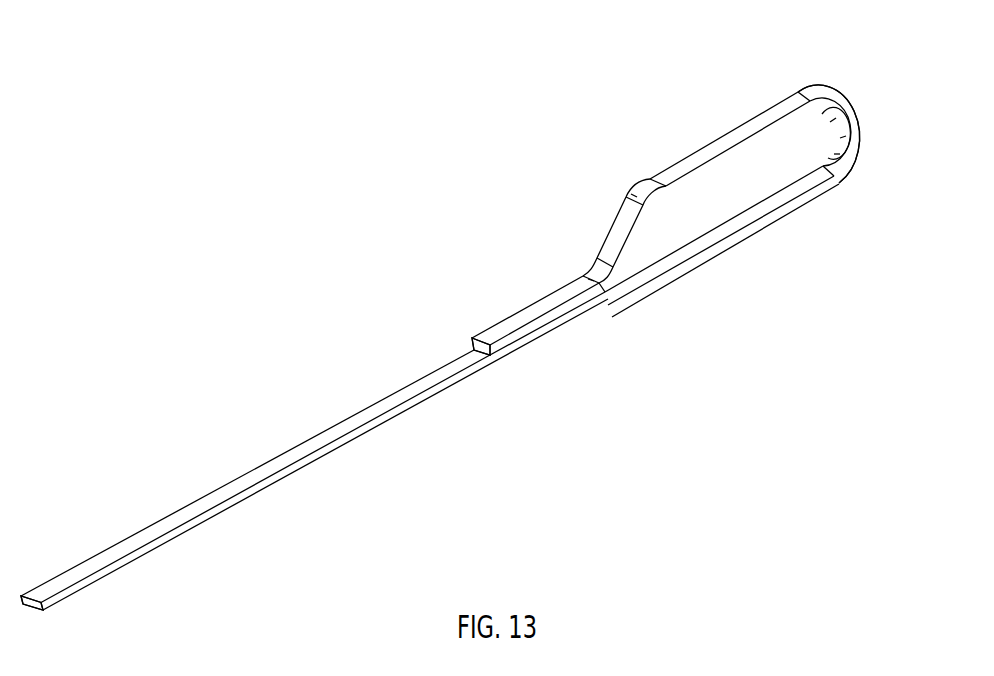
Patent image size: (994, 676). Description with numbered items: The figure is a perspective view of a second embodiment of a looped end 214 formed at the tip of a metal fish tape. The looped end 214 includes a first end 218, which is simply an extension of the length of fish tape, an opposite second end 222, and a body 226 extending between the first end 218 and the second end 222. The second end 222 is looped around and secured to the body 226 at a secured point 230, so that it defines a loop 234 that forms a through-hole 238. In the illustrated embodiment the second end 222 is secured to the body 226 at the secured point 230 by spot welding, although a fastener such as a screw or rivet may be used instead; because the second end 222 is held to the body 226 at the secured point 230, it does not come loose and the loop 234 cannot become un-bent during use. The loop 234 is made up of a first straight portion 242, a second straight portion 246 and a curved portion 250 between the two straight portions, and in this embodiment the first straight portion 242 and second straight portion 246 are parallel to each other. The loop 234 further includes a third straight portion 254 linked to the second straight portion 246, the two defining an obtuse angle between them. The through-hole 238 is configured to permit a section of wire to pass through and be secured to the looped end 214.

The looped end 214 is at (195, 327).
The first end 218 is at (61, 572).
The second end 222 is at (488, 321).
The body 226 is at (341, 439).
The secured point 230 is at (478, 352).
The loop 234 is at (823, 78).
The through-hole 238 is at (799, 138).
The first straight portion 242 is at (741, 220).
The second straight portion 246 is at (713, 135).
The curved portion 250 is at (853, 103).
The third straight portion 254 is at (608, 222).